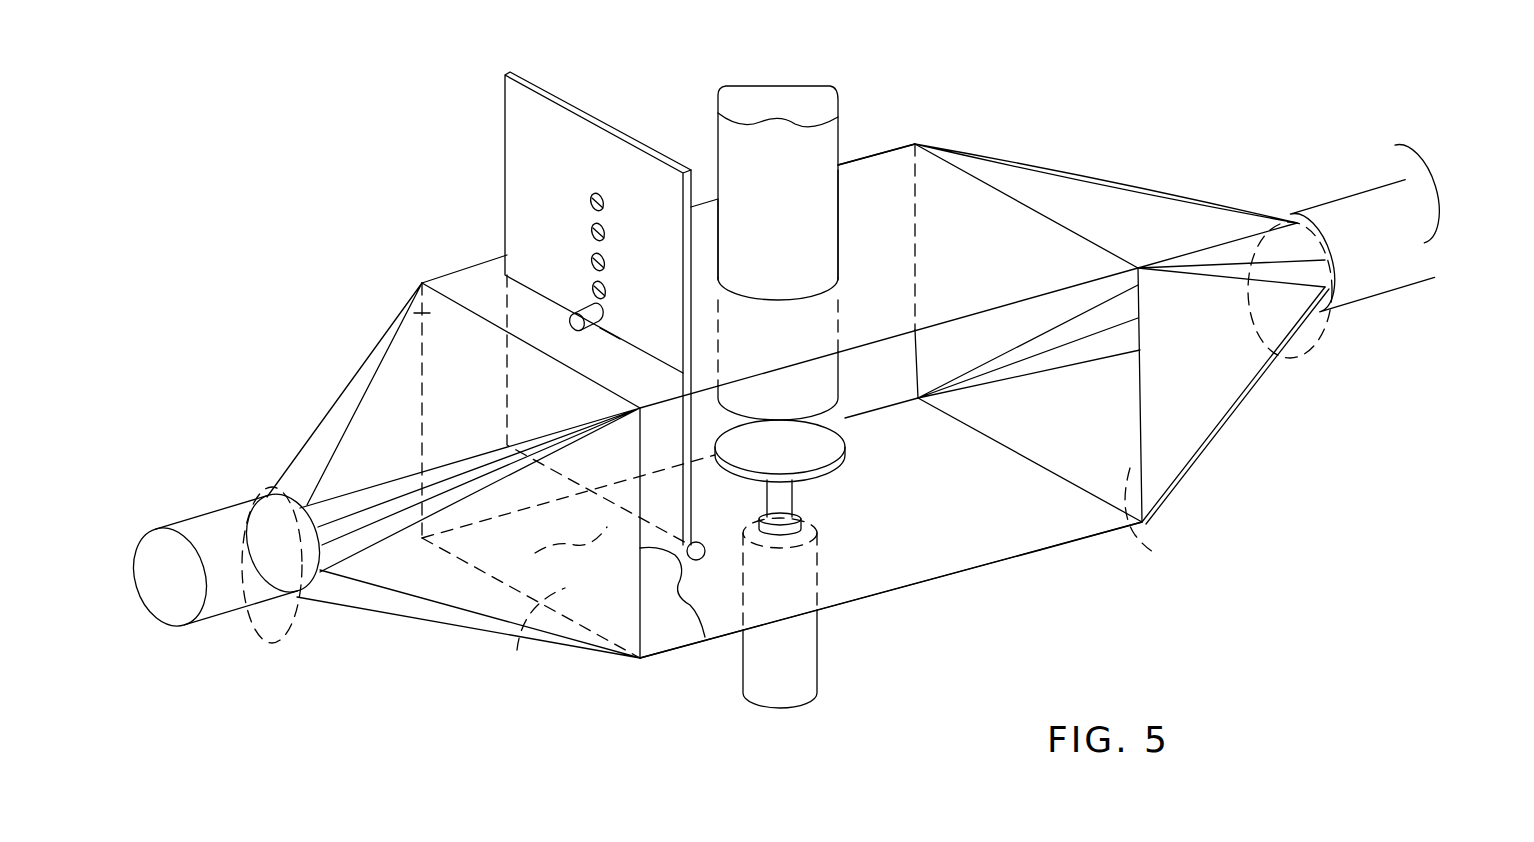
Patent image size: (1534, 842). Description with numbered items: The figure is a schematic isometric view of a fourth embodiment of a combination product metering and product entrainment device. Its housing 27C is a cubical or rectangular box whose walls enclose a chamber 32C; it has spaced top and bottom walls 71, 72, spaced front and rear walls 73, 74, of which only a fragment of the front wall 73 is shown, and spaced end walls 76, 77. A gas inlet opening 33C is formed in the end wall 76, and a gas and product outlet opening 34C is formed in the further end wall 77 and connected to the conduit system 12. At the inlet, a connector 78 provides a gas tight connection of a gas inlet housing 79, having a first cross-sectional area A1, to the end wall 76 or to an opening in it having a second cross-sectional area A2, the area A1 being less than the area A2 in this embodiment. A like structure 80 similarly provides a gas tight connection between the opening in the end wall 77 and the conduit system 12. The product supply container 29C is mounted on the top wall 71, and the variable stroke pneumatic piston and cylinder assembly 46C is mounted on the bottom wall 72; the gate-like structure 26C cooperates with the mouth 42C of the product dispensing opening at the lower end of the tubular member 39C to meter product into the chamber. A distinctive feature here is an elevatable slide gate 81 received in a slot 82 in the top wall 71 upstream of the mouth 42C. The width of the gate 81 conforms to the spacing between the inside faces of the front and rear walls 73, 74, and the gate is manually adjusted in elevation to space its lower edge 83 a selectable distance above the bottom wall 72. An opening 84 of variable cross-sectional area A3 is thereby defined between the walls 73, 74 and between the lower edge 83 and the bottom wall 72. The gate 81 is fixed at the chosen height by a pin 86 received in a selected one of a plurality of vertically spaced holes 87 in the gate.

The conduit system 12 is at (1455, 245).
The gate-like structure 26C is at (830, 466).
The housing 27C is at (866, 157).
The cylinder 29C is at (823, 130).
The chamber 32C is at (1051, 513).
The gas inlet opening 33C is at (303, 574).
The gas and product outlet opening 34C is at (1305, 362).
The tubular member 39C is at (820, 263).
The mouth of the product dispensing opening 42C is at (840, 410).
The variable stroke pneumatic piston and cylinder assembly 46C is at (755, 658).
The top wall 71 is at (480, 285).
The bottom wall 72 is at (916, 572).
The front wall 73 is at (660, 632).
The rear wall 74 is at (916, 400).
The end wall 76 is at (518, 648).
The end wall 77 is at (1143, 535).
The connector 78 is at (349, 386).
The gas inlet housing 79 is at (143, 548).
The like structure 80 is at (1113, 188).
The slide gate 81 is at (525, 115).
The slot 82 is at (625, 337).
The lower edge 83 is at (704, 554).
The opening 84 is at (592, 503).
The pin 86 is at (575, 318).
The holes 87 is at (597, 198).
The first cross-sectional area A1 is at (270, 468).
The second cross-sectional area A2 is at (415, 300).
The variable cross-sectional area A3 is at (552, 549).